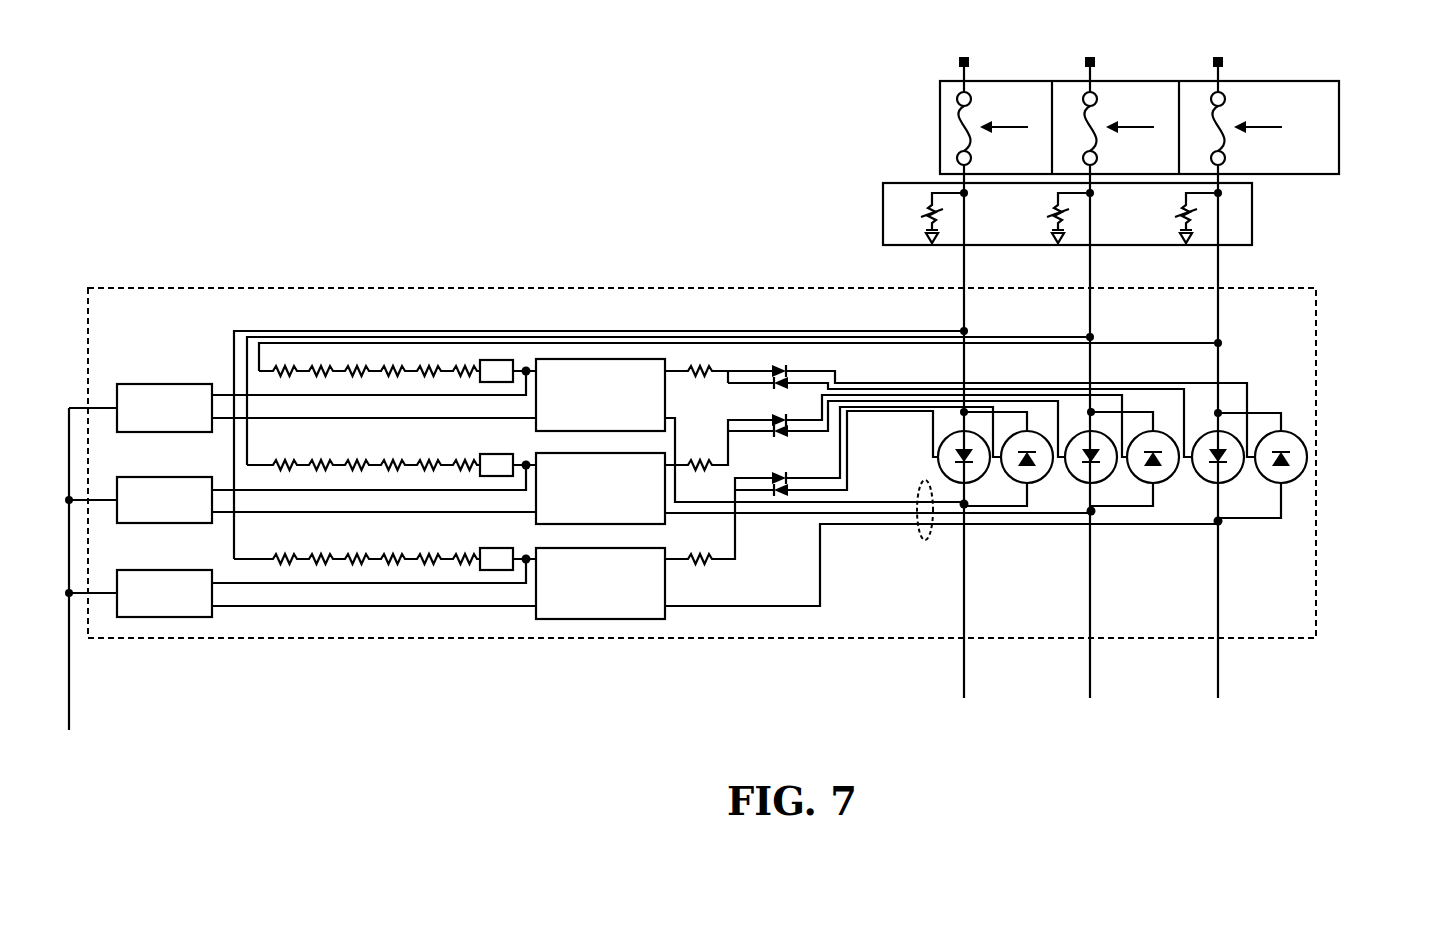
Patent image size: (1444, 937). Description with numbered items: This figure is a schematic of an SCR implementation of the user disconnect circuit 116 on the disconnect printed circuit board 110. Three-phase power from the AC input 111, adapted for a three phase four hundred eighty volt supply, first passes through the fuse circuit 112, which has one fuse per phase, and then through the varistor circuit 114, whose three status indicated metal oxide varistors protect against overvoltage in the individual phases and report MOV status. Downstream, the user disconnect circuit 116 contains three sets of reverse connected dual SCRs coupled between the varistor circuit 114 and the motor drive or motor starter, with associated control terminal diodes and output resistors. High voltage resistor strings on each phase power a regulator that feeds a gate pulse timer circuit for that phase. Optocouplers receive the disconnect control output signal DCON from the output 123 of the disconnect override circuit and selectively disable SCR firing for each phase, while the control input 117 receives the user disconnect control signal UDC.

The disconnect printed circuit board 110 is at (330, 143).
The AC input 111 is at (940, 38).
The fuse circuit 112 is at (940, 95).
The varistor circuit 114 is at (883, 192).
The user disconnect circuit 116 is at (162, 288).
The control input 117 is at (925, 548).
The output 123 is at (69, 705).